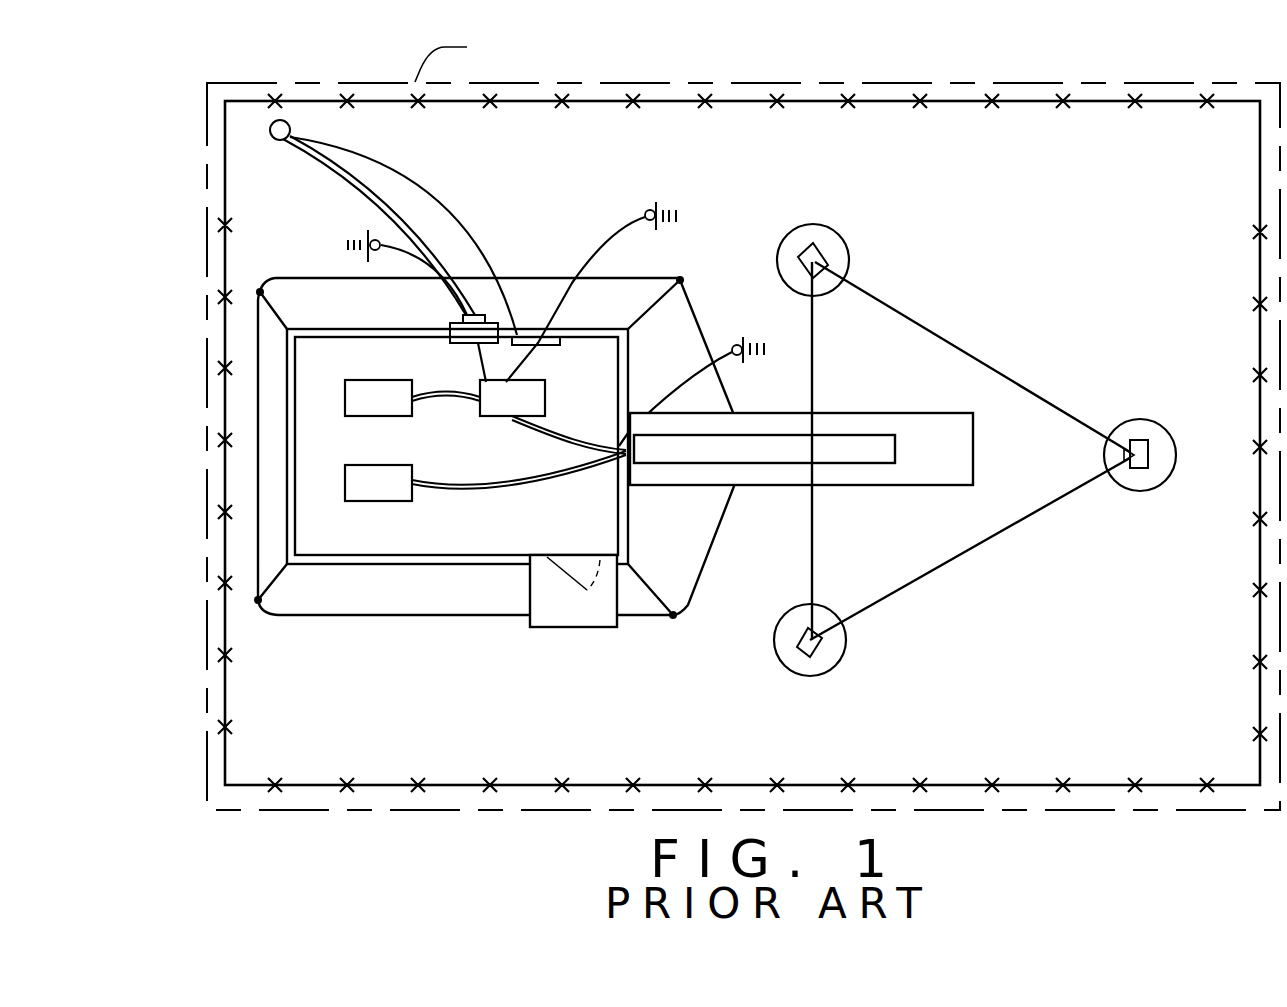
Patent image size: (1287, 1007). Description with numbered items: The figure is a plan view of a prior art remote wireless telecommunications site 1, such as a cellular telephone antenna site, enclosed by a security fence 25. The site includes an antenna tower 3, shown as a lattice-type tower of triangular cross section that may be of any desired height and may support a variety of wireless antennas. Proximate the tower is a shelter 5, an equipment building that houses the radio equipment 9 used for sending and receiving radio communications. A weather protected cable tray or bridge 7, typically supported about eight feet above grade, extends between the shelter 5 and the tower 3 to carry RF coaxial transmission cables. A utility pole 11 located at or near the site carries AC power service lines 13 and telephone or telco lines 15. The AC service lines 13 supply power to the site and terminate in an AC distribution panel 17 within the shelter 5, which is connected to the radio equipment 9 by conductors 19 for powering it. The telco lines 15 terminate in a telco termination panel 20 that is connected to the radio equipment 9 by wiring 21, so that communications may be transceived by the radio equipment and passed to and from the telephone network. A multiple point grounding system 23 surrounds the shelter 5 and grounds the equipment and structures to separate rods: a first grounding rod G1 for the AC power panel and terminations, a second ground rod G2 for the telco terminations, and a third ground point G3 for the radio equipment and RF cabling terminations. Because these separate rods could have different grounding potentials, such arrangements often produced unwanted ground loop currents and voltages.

The remote wireless telecommunications site 1 is at (1140, 65).
The security fence 25 is at (963, 101).
The utility pole 11 is at (283, 120).
The AC power service lines 13 is at (367, 196).
The telephone line 15 is at (441, 220).
The multiple point grounding system 23 is at (527, 272).
The shelter 5 is at (403, 578).
The AC distribution panel 17 is at (449, 333).
The wiring 21 is at (518, 344).
The conductors 19 is at (482, 372).
The telco termination panel 20 is at (562, 348).
The radio equipment 9 is at (373, 418).
The first grounding rod G1 is at (320, 246).
The second ground rod G2 is at (670, 192).
The third ground point G3 is at (759, 322).
The cable tray or bridge 7 is at (782, 488).
The antenna tower 3 is at (1020, 335).